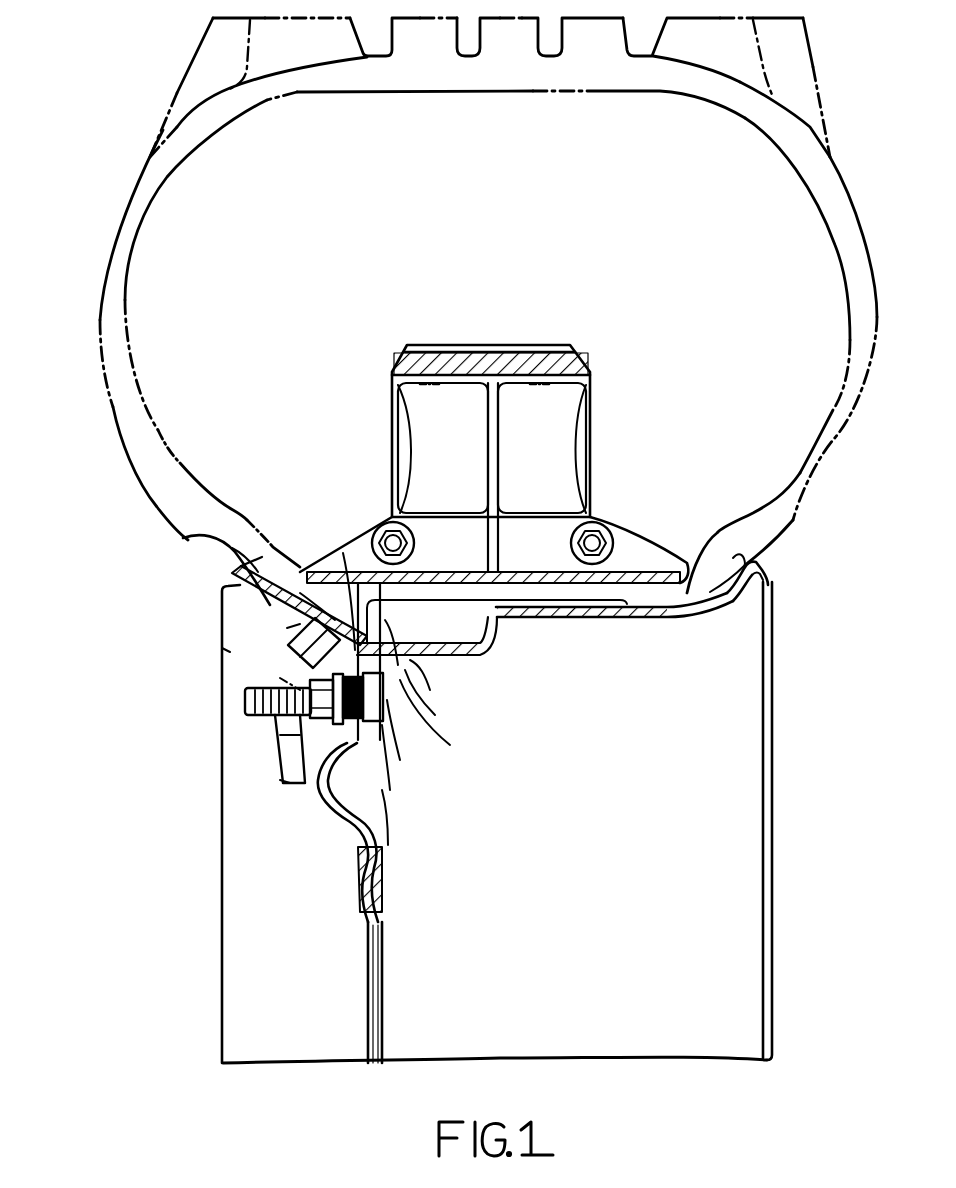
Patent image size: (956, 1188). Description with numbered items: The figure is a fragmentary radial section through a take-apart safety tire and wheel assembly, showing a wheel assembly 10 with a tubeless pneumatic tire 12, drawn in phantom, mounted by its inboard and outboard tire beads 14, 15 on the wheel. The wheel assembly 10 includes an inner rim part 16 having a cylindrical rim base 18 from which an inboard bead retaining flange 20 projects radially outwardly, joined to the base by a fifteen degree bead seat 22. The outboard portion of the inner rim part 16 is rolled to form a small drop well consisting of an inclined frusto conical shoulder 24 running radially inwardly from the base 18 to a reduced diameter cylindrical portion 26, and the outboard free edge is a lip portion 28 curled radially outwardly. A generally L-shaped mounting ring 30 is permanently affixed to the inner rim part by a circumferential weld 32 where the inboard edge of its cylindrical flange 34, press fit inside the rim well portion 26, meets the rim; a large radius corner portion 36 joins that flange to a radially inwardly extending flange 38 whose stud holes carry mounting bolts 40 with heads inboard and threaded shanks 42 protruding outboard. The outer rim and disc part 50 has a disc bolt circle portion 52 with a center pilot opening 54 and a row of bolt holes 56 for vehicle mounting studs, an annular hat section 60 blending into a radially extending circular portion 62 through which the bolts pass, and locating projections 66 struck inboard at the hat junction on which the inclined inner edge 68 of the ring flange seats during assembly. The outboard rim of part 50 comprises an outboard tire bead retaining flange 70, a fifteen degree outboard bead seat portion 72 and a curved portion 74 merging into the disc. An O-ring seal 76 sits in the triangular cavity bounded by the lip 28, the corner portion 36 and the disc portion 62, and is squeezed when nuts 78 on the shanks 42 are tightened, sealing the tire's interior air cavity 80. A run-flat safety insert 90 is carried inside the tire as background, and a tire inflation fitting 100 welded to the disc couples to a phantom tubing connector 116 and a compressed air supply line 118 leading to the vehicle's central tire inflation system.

The wheel assembly 10 is at (164, 592).
The tubeless pneumatic tire 12 is at (108, 412).
The inboard tire bead 14 is at (740, 526).
The outboard tire bead 15 is at (247, 518).
The inner rim part 16 is at (776, 599).
The cylindrical rim base 18 is at (595, 621).
The inboard bead retaining flange 20 is at (776, 542).
The bead seat 22 is at (682, 617).
The inclined frusto conical shoulder 24 is at (470, 617).
The reduced diameter cylindrical portion 26 is at (413, 673).
The lip portion 28 is at (368, 640).
The mounting ring 30 is at (407, 673).
The circumferential weld 32 is at (415, 658).
The cylindrical flange 34 is at (407, 687).
The corner portion 36 is at (393, 663).
The radially inwardly extending flange 38 is at (377, 727).
The mounting bolts 40 is at (387, 710).
The threaded shank 42 is at (245, 700).
The outer rim and disc part 50 is at (217, 652).
The disc bolt circle portion 52 is at (350, 840).
The center pilot opening 54 is at (378, 963).
The bolt holes 56 is at (378, 872).
The annular hat section 60 is at (320, 763).
The circular portion 62 is at (343, 553).
The locating projections 66 is at (343, 742).
The inclined inner edge 68 is at (377, 793).
The outboard tire bead retaining flange 70 is at (186, 538).
The outboard tire bead seat portion 72 is at (240, 609).
The curved portion 74 is at (300, 593).
The O-ring seal 76 is at (363, 620).
The nuts 78 is at (289, 660).
The interior air cavity 80 is at (542, 236).
The run-flat safety insert 90 is at (596, 360).
The fitting 100 is at (286, 632).
The tubing connector 116 is at (280, 678).
The compressed air supply line 118 is at (280, 780).